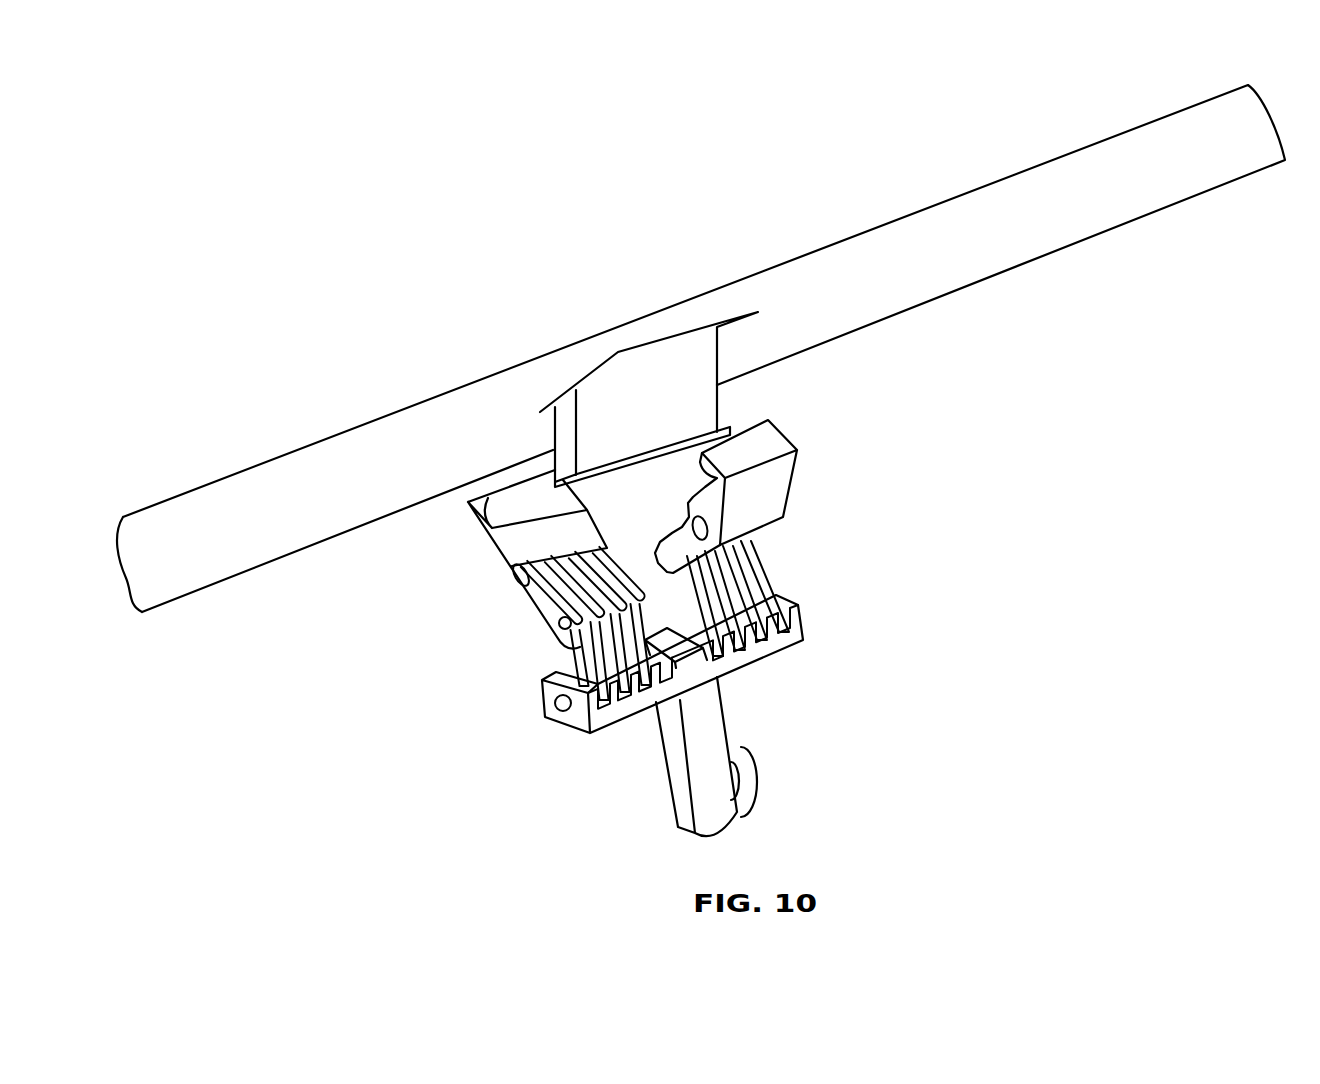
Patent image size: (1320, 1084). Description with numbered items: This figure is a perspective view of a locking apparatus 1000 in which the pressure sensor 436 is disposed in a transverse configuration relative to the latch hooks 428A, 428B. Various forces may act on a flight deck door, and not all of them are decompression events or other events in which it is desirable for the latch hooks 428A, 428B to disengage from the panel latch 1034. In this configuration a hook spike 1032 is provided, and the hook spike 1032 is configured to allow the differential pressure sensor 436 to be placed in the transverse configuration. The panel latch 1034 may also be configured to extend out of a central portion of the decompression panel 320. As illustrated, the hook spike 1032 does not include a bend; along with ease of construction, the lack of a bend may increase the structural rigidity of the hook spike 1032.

The locking apparatus 1000 is at (323, 388).
The decompression panel 320 is at (288, 493).
The panel latch 1034 is at (697, 413).
The latch hook 428A is at (507, 510).
The latch hook 428B is at (780, 477).
The hook spike 1032 is at (660, 760).
The pressure sensor 436 is at (730, 762).